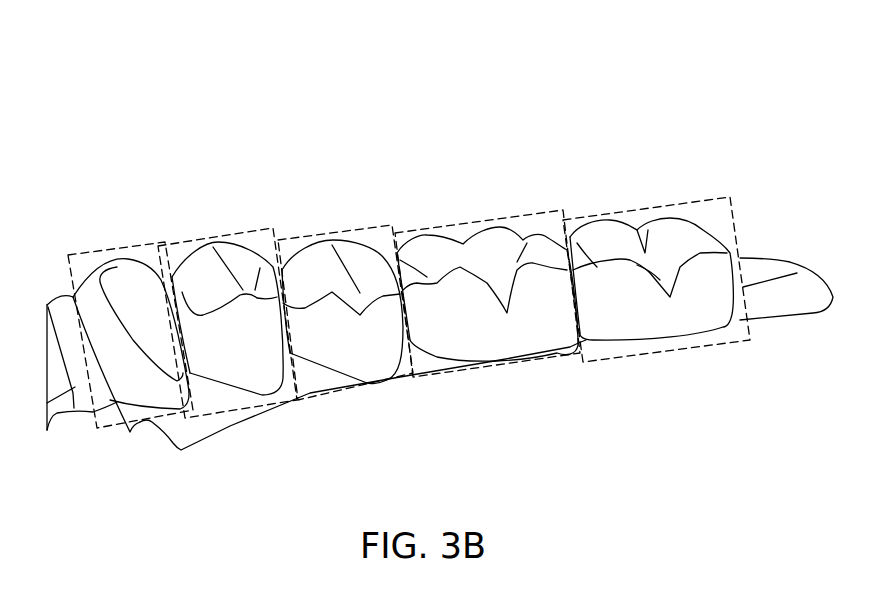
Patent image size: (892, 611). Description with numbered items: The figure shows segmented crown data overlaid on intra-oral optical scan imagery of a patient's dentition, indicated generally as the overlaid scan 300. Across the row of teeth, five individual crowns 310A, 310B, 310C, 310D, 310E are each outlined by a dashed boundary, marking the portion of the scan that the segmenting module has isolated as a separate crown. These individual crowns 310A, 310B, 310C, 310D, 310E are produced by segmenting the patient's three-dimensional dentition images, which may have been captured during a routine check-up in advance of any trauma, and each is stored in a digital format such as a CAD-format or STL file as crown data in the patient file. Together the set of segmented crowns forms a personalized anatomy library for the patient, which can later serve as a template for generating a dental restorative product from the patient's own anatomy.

The dental arch / set of teeth 300 is at (311, 64).
The individual crown 310A is at (113, 246).
The individual crown 310B is at (210, 238).
The individual crown 310C is at (320, 233).
The individual crown 310D is at (463, 222).
The individual crown 310E is at (632, 210).